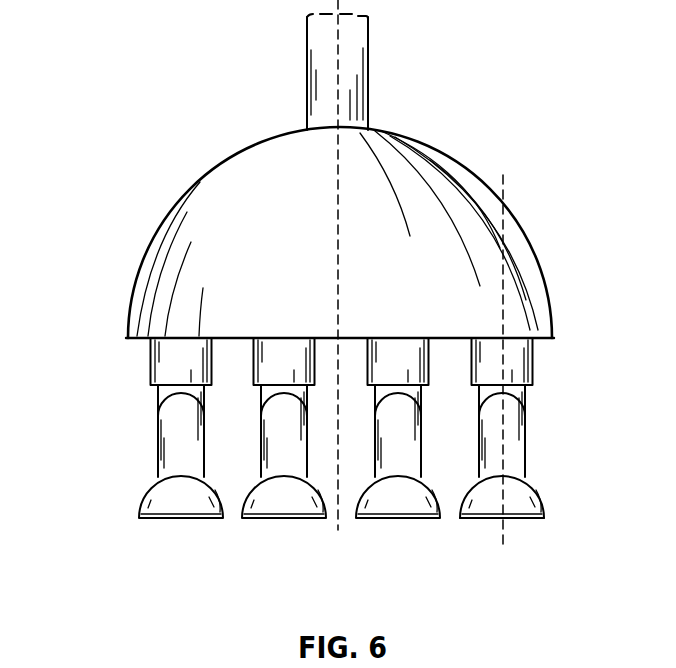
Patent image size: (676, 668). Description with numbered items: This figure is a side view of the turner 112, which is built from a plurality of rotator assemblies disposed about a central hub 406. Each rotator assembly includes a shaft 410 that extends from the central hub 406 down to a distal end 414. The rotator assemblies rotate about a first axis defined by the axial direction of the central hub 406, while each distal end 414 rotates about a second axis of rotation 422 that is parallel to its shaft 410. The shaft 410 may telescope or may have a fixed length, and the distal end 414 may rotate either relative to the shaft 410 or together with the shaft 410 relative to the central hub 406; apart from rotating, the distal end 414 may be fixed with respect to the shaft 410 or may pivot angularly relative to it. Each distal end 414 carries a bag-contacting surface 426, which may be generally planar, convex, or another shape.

The turner 112 is at (118, 124).
The central hub 406 is at (473, 174).
The shaft 410 is at (525, 450).
The distal end 414 is at (541, 506).
The second axis of rotation 422 is at (504, 181).
The bag-contacting surface 426 is at (528, 521).